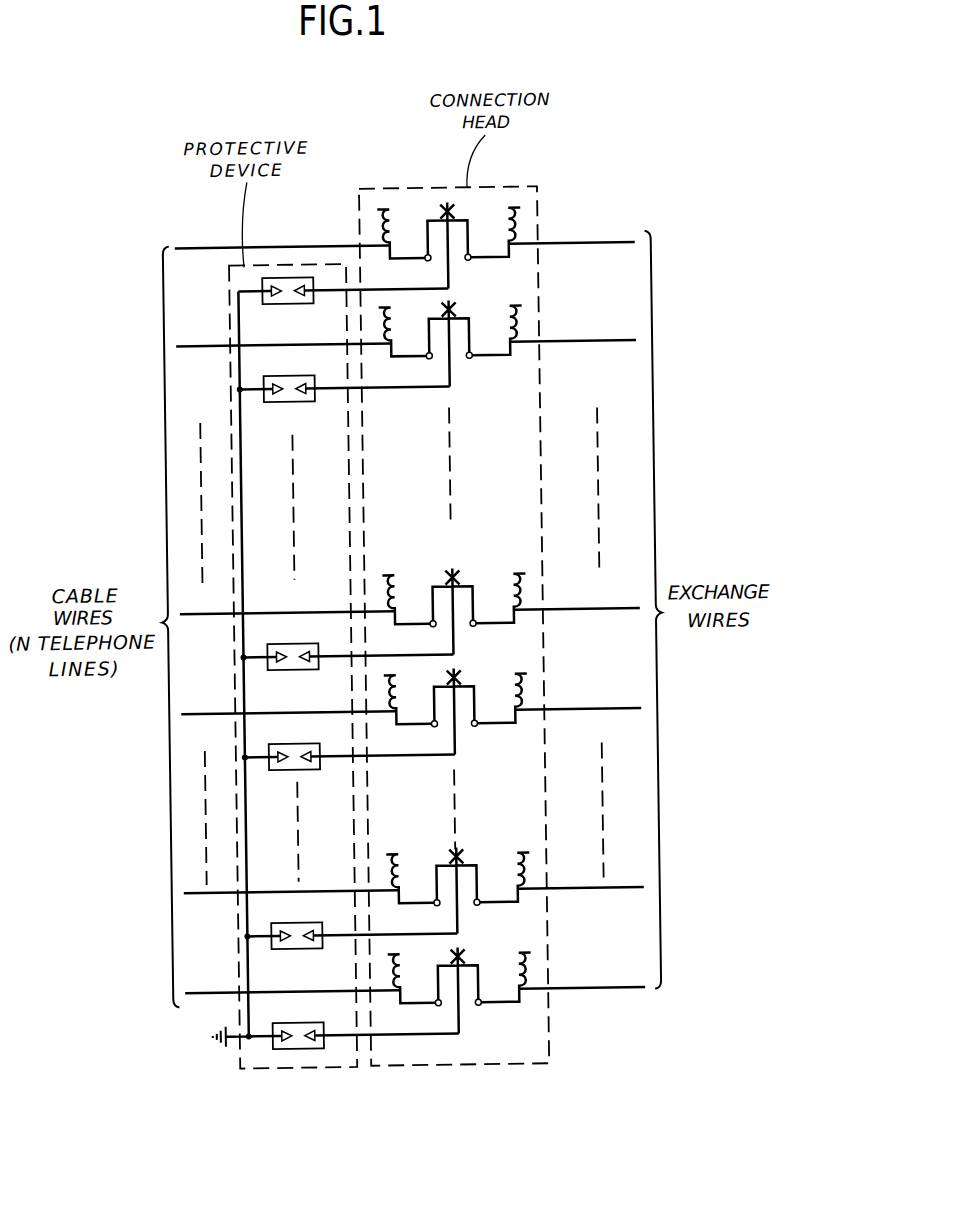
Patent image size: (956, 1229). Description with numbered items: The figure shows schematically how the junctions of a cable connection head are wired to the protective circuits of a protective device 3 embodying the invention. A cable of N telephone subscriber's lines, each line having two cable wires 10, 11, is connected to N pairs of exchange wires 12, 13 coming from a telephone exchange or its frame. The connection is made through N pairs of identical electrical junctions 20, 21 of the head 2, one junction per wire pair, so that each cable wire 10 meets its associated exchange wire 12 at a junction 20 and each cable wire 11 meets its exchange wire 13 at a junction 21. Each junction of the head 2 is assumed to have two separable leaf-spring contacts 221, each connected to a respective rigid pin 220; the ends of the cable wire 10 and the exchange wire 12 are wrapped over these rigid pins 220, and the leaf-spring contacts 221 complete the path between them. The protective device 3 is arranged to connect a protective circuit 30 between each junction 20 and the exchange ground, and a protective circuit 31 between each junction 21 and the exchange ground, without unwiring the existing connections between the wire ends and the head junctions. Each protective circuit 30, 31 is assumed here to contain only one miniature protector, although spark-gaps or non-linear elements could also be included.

The head 2 is at (507, 188).
The protective device 3 is at (289, 264).
The cable wire 10 is at (201, 244).
The cable wire 11 is at (199, 342).
The exchange wire 12 is at (611, 244).
The exchange wire 13 is at (617, 342).
The electrical junction 20 is at (452, 546).
The electrical junction 21 is at (459, 310).
The protective circuit 30 is at (286, 303).
The protective circuit 31 is at (290, 401).
The rigid pin 220 is at (391, 255).
The separable leaf-spring contact 221 is at (426, 229).